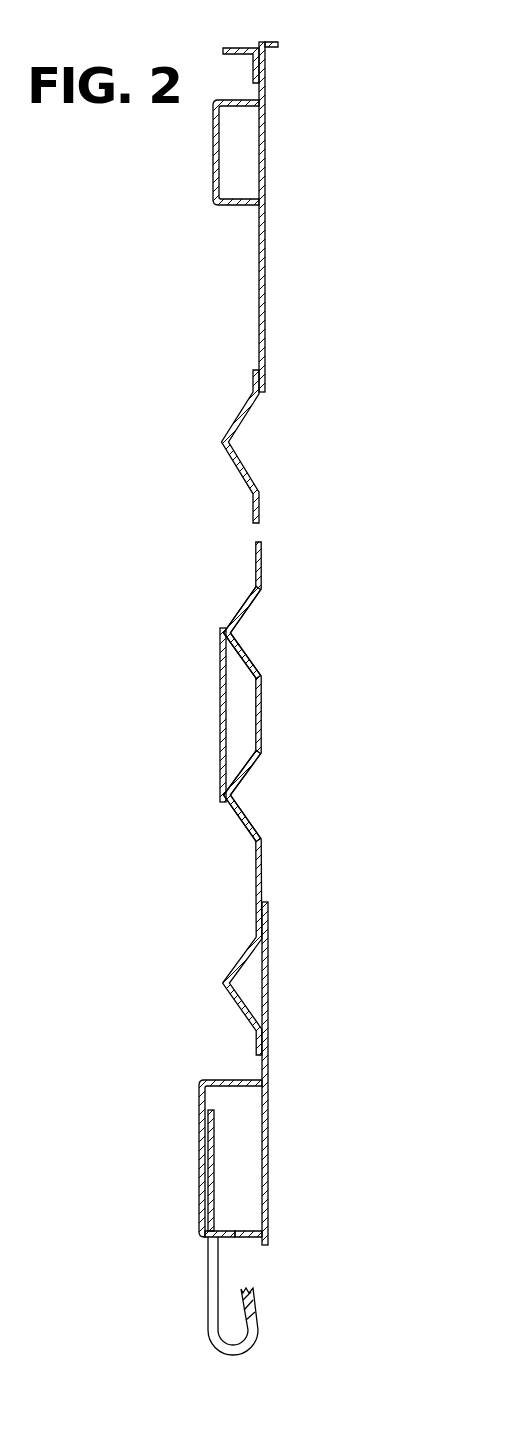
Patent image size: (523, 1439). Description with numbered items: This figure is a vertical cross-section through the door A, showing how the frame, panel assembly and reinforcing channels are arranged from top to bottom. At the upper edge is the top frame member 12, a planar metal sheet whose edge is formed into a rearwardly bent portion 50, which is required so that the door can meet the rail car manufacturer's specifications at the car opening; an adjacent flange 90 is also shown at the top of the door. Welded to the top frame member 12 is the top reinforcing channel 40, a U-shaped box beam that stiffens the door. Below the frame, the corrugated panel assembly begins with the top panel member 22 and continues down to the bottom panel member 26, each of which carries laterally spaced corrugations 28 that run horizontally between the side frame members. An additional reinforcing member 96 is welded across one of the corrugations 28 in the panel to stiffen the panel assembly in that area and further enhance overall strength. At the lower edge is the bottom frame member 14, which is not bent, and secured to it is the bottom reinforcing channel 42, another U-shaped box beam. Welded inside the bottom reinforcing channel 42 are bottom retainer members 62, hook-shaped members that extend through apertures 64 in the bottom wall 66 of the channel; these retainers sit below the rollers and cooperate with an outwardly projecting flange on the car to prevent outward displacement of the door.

The door A is at (236, 320).
The top frame member 12 is at (265, 258).
The bottom frame member 14 is at (268, 1148).
The top panel member 22 is at (225, 420).
The bottom panel member 26 is at (246, 886).
The corrugations 28 is at (245, 657).
The top reinforcing channel 40 is at (213, 152).
The bottom reinforcing channel 42 is at (199, 1137).
The rearwardly bent portion 50 is at (268, 42).
The bottom retainer members 62 is at (212, 1307).
The apertures 64 is at (200, 1240).
The bottom wall 66 is at (242, 1238).
The upper hanger flange 90 is at (240, 48).
The reinforcing member 96 is at (220, 691).